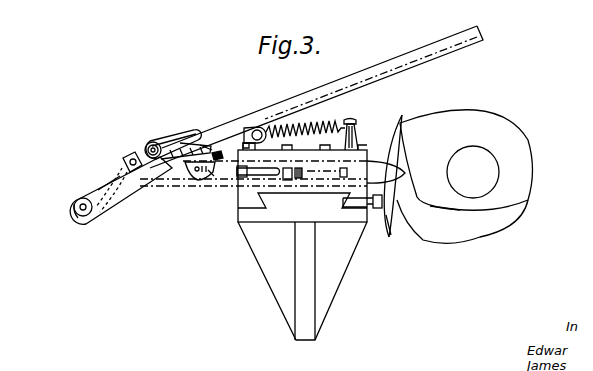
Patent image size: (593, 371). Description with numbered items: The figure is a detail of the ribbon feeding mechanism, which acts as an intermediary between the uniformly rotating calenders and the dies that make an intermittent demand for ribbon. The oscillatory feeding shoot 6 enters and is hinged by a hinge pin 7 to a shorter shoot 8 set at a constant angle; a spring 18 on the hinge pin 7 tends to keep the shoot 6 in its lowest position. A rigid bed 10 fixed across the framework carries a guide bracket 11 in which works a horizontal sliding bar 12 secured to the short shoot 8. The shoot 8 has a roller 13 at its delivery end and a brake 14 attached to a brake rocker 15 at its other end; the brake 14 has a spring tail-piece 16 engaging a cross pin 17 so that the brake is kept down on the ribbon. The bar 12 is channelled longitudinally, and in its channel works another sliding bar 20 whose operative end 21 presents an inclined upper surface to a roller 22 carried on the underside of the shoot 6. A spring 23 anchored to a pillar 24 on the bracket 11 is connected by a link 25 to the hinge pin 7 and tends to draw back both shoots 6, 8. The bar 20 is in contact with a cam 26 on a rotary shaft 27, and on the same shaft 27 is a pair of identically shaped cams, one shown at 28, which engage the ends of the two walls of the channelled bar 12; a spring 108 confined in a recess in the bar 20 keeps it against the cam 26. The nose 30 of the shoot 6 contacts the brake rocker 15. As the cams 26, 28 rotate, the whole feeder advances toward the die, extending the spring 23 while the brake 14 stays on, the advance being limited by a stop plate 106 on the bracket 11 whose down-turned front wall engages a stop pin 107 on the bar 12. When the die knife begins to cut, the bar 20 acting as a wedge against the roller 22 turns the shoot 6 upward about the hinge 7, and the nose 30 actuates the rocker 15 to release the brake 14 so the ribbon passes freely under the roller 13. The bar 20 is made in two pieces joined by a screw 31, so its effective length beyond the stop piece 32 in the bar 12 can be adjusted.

The oscillatory feeding shoot 6 is at (392, 65).
The hinge pin 7 is at (152, 143).
The shorter shoot 8 is at (78, 202).
The rigid bed 10 is at (273, 222).
The guide bracket 11 is at (240, 193).
The horizontal sliding bar 12 is at (408, 113).
The roller 13 is at (75, 213).
The brake 14 is at (116, 190).
The brake rocker 15 is at (130, 160).
The spring tail-piece 16 is at (102, 175).
The cross pin 17 is at (97, 192).
The spring 18 is at (182, 133).
The sliding bar 20 is at (394, 215).
The operative end (wedge) 21 is at (209, 176).
The roller 22 is at (193, 179).
The spring 23 is at (320, 122).
The pillar 24 is at (355, 136).
The link 25 is at (210, 150).
The cam 26 is at (445, 208).
The rotary shaft 27 is at (472, 158).
The cam 28 is at (480, 237).
The nose 30 is at (147, 152).
The screw 31 is at (258, 173).
The stop piece 32 is at (290, 167).
The stop plate 106 is at (238, 146).
The stop pin 107 is at (216, 153).
The spring 108 is at (344, 178).